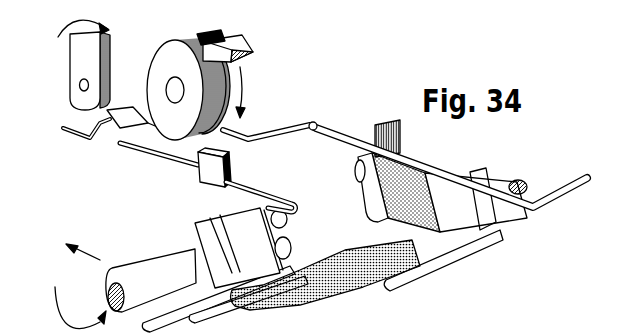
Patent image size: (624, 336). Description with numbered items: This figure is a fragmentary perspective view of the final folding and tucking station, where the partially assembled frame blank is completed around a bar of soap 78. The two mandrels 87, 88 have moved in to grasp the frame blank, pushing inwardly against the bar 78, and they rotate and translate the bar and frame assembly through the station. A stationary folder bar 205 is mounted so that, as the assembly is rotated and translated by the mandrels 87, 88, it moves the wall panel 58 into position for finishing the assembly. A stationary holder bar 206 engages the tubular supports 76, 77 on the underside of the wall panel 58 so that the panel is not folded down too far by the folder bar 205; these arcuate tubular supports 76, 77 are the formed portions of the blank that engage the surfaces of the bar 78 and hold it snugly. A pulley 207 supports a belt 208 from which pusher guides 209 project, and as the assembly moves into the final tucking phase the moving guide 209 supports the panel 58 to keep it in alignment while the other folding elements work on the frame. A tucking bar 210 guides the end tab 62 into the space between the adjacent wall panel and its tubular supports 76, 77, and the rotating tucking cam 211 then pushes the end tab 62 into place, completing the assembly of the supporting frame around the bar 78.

The stationary folder bar 205 is at (339, 134).
The stationary holder bar 206 is at (165, 161).
The pulley 207 is at (168, 56).
The belt 208 is at (223, 33).
The pusher guide 209 is at (252, 54).
The tucking bar 210 is at (72, 134).
The rotating tucking cam 211 is at (77, 52).
The wall panel 58 is at (405, 178).
The end tab 62 is at (361, 156).
The tubular support 76 is at (295, 300).
The tubular support 77 is at (356, 172).
The bar of soap 78 is at (343, 238).
The mandrel 87 is at (477, 171).
The mandrel 88 is at (185, 238).